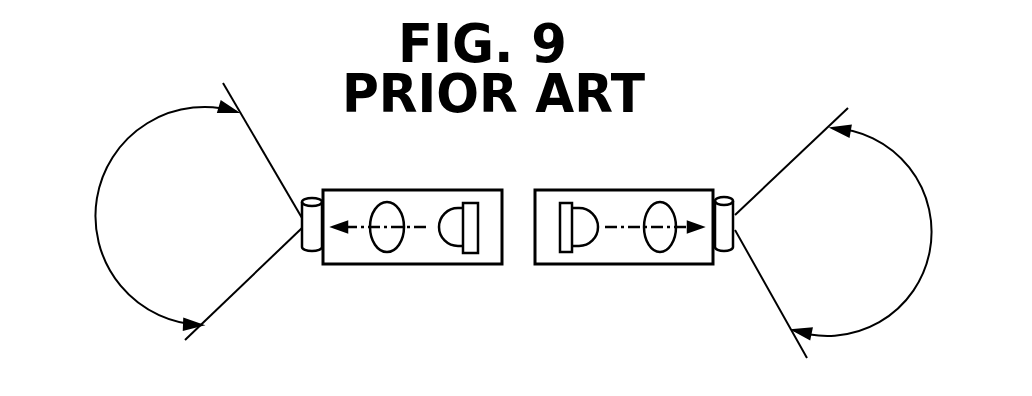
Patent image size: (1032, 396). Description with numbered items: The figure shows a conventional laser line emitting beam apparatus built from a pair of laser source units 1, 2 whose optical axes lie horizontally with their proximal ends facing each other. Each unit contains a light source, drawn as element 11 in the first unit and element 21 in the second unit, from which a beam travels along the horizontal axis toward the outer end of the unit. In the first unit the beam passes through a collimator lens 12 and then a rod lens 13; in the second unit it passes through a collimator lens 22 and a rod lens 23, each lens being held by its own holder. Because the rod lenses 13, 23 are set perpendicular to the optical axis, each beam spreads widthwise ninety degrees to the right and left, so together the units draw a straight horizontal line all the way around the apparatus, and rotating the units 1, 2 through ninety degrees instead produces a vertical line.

The laser source unit 1 is at (422, 205).
The laser source unit 2 is at (625, 205).
The light emitting element 11 is at (460, 250).
The collimator lens 12 is at (386, 250).
The rod lens 13 is at (313, 253).
The light receiving element 21 is at (588, 248).
The collimator lens 22 is at (664, 250).
The rod lens 23 is at (721, 198).